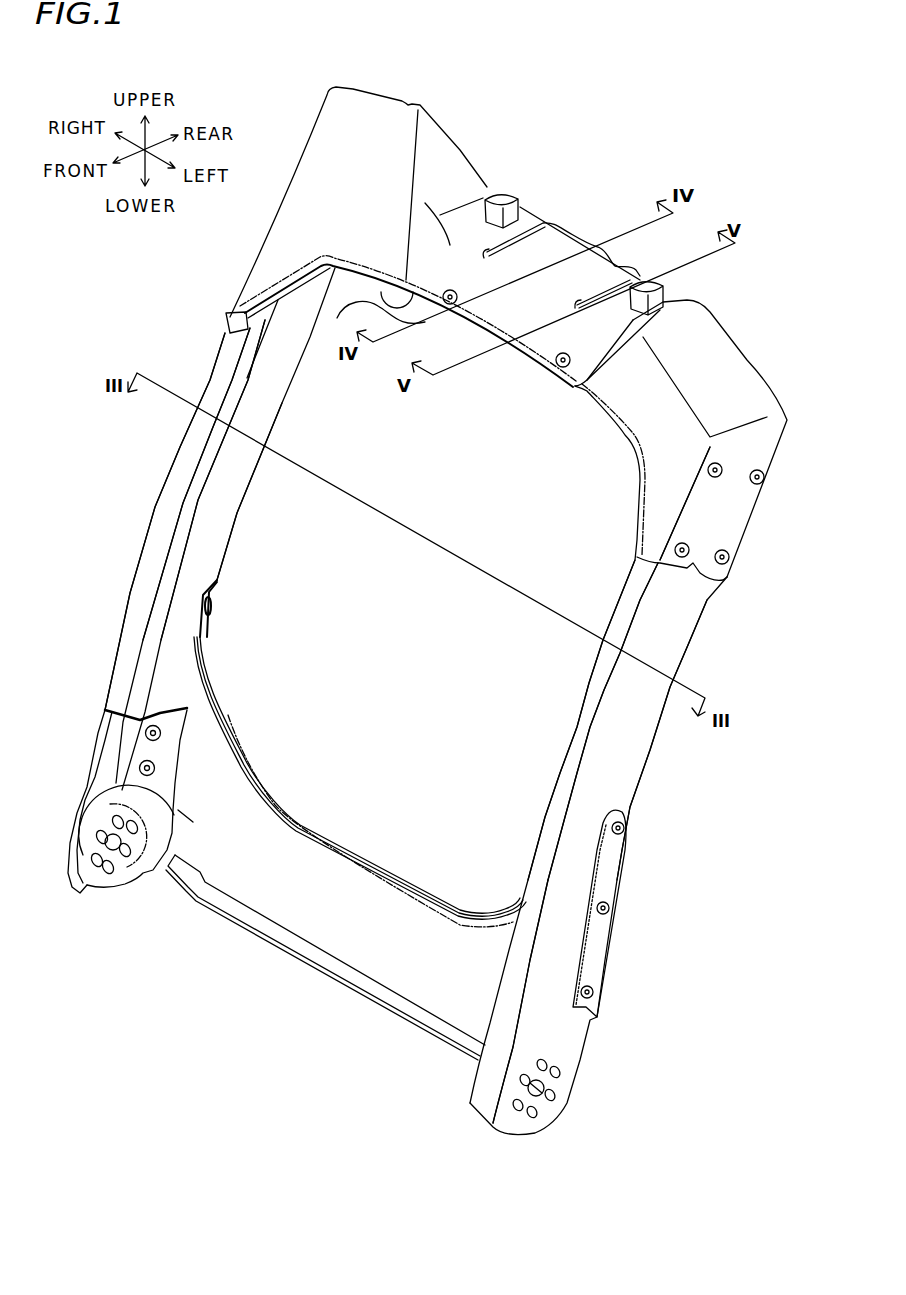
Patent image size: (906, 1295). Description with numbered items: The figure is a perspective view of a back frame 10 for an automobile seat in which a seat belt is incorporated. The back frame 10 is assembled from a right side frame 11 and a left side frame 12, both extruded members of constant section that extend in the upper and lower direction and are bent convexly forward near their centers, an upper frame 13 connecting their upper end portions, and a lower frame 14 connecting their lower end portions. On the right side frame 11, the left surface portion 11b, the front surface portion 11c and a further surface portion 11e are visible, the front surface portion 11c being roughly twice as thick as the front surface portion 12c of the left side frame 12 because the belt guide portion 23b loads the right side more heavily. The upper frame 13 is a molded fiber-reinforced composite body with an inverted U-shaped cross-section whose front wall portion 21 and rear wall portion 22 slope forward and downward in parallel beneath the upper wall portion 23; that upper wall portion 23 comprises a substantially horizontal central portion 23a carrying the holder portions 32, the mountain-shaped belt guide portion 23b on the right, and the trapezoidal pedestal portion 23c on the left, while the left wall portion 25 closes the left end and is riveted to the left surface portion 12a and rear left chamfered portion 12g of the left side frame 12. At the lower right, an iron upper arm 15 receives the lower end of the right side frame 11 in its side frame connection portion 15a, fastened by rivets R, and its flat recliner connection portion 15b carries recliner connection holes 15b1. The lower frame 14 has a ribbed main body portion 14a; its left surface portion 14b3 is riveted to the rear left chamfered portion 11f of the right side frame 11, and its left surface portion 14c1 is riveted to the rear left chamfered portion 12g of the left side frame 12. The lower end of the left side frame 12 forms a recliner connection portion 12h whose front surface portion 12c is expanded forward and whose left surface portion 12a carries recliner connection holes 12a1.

The back frame 10 is at (123, 448).
The right side frame 11 is at (155, 507).
The left surface portion 11b is at (213, 527).
The front surface portion 11c is at (155, 540).
The front flange of left side frame 11e is at (197, 495).
The rear left chamfered portion 11f is at (213, 577).
The left side frame 12 is at (648, 750).
The left surface portion 12a is at (600, 787).
The recliner connection holes 12a1 is at (557, 1090).
The front surface portion 12c is at (578, 728).
The rear left chamfered portion 12g is at (632, 768).
The recliner connection portion 12h is at (560, 1038).
The upper frame 13 is at (720, 320).
The lower frame 14 is at (283, 940).
The main body portion 14a is at (340, 850).
The left surface portion 14b3 is at (212, 626).
The left surface portion 14c1 is at (597, 943).
The upper arm 15 is at (90, 773).
The side frame connection portion 15a is at (103, 725).
The recliner connection portion 15b is at (117, 870).
The recliner connection holes 15b1 is at (98, 867).
The front wall portion 21 is at (587, 352).
The rear wall portion 22 is at (330, 333).
The upper wall portion 23 is at (555, 242).
The central portion 23a is at (598, 265).
The belt guide portion 23b is at (378, 93).
The pedestal portion 23c is at (733, 387).
The left wall portion 25 is at (715, 525).
The holder portions 32 is at (513, 188).
The rivets R is at (451, 288).